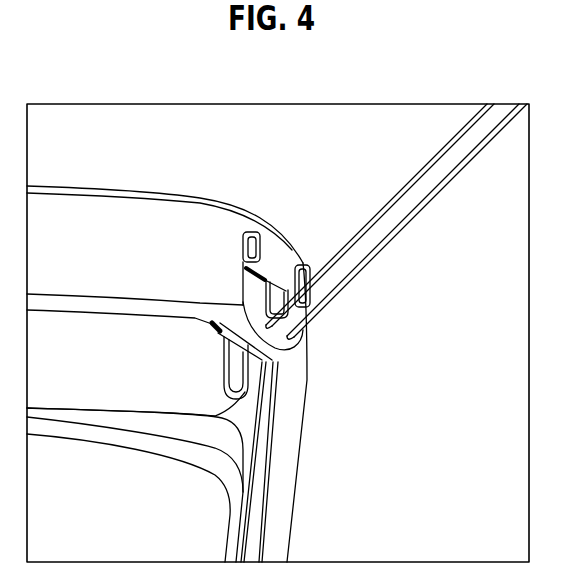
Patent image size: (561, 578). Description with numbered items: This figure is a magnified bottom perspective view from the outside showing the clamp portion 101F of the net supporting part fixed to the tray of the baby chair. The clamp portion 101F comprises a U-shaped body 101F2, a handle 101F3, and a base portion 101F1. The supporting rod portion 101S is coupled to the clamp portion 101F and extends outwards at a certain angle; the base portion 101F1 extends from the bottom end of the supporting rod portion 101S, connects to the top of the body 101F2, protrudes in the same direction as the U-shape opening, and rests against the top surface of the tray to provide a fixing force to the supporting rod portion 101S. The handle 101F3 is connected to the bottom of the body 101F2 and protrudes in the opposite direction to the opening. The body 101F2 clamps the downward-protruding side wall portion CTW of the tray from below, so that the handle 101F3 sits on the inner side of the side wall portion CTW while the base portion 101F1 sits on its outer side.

The base portion 101F1 is at (247, 231).
The body 101F2 is at (275, 350).
The handle 101F3 is at (250, 380).
The clamp portion 101F is at (316, 304).
The supporting rod portion 101S is at (362, 230).
The side wall portion CTW is at (305, 512).